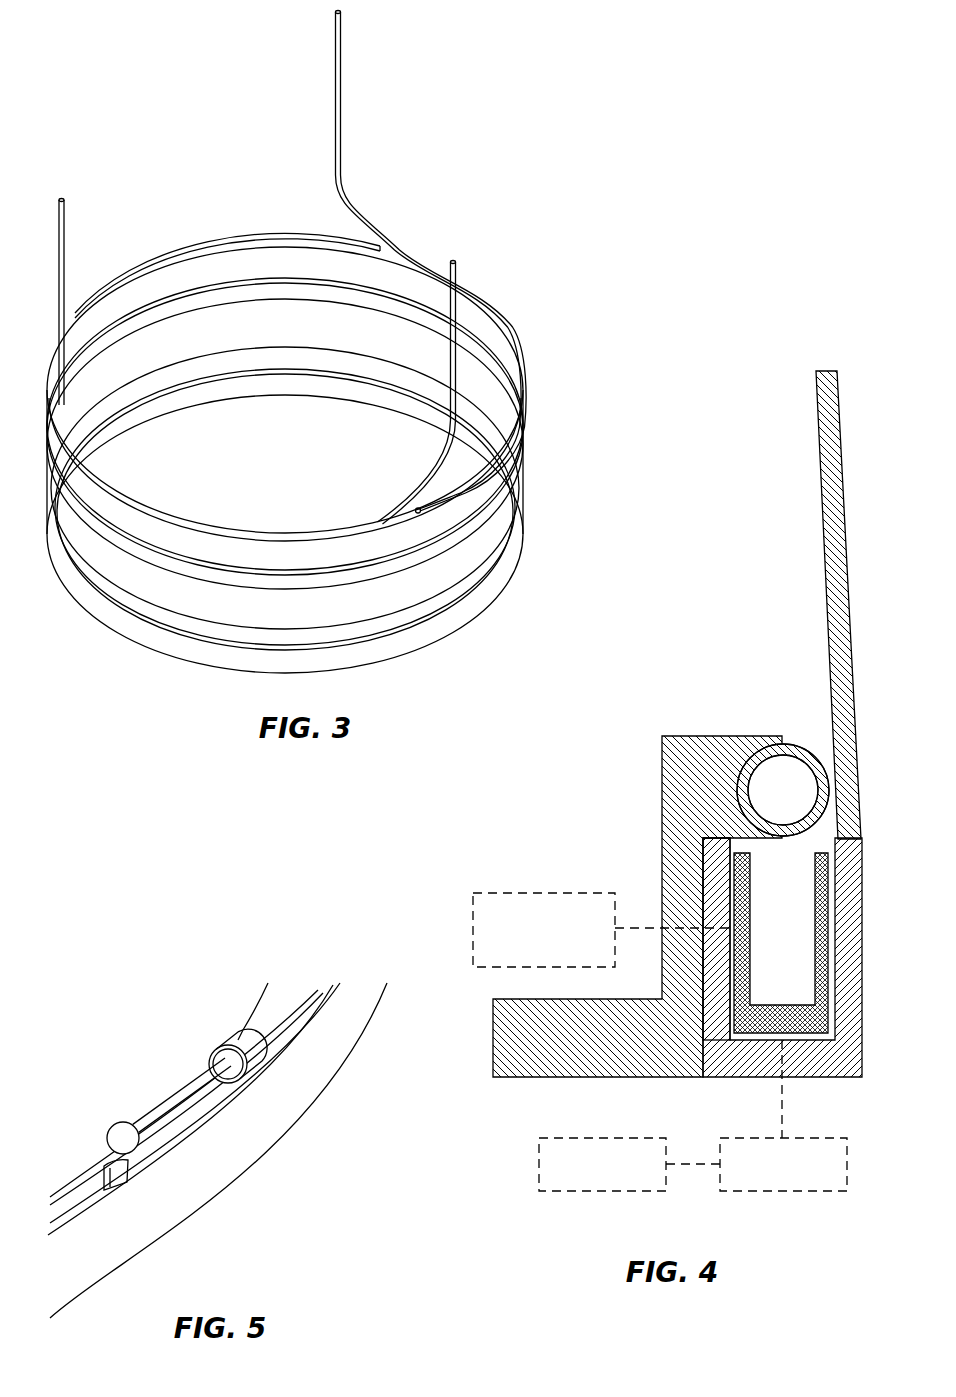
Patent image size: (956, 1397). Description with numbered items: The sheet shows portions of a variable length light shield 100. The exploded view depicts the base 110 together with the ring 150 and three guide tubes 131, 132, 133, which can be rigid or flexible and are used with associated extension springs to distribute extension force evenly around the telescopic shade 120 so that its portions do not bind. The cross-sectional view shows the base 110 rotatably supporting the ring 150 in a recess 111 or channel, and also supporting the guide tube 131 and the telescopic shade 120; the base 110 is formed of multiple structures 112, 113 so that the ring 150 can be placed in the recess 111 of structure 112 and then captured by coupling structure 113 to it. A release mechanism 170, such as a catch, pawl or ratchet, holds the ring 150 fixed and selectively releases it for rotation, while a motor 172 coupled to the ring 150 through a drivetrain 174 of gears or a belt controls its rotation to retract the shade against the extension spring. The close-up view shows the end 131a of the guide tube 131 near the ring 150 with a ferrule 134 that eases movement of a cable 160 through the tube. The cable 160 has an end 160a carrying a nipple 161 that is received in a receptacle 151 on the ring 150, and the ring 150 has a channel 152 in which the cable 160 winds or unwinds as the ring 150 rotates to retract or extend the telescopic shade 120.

In FIG. 4, the variable length light shield 100 is at (667, 785).
In FIG. 3, the base 110 is at (137, 635).
In FIG. 4, the base 110 is at (677, 901).
In FIG. 4, the recess 111 is at (722, 880).
In FIG. 4, the structure 112 is at (732, 981).
In FIG. 4, the structure 113 is at (637, 906).
In FIG. 4, the telescopic shade 120 is at (820, 512).
In FIG. 3, the guide tube 131 is at (343, 90).
In FIG. 4, the guide tube 131 is at (797, 745).
In FIG. 5, the guide tube 131 is at (258, 1010).
In FIG. 5, the end of the guide tube 131a is at (229, 1018).
In FIG. 3, the guide tube 132 is at (458, 268).
In FIG. 3, the guide tube 133 is at (67, 236).
In FIG. 5, the ferrule 134 is at (226, 1042).
In FIG. 3, the ring 150 is at (370, 572).
In FIG. 4, the ring 150 is at (736, 868).
In FIG. 5, the ring 150 is at (215, 1193).
In FIG. 5, the receptacle 151 is at (118, 1182).
In FIG. 4, the channel 152 is at (786, 905).
In FIG. 5, the channel 152 is at (170, 1136).
In FIG. 5, the cable 160 is at (174, 1108).
In FIG. 5, the end of the cable 160a is at (120, 1113).
In FIG. 5, the nipple 161 is at (112, 1132).
In FIG. 4, the release mechanism 170 is at (535, 893).
In FIG. 4, the motor 172 is at (601, 1191).
In FIG. 4, the drivetrain 174 is at (786, 1191).